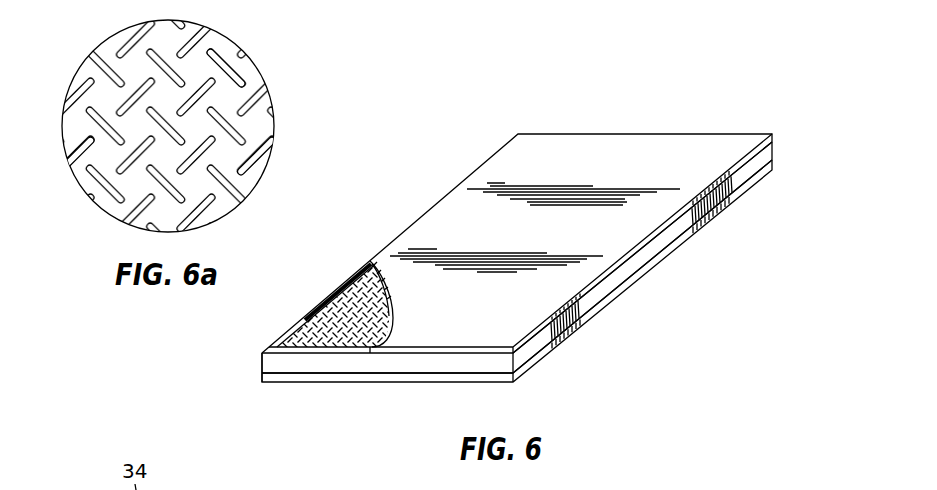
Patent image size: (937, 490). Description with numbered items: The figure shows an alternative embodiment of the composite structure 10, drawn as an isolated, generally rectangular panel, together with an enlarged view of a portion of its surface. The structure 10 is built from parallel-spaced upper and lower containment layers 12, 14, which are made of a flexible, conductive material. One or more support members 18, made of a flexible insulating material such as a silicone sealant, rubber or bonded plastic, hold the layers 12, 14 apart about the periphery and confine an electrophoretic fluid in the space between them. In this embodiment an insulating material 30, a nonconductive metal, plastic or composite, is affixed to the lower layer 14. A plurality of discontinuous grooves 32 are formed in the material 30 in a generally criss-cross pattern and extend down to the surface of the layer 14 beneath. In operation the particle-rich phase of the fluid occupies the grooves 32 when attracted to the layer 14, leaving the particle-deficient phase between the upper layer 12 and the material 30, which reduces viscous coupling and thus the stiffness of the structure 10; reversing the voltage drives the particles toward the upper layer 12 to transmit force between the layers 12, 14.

In FIG. 6, the composite structure 10 is at (410, 176).
In FIG. 6, the upper containment layer 12 is at (505, 162).
In FIG. 6, the lower containment layer 14 is at (285, 382).
In FIG. 6, the support member 18 is at (773, 151).
In FIG. 6a, the insulating material 30 is at (99, 92).
In FIG. 6, the insulating material 30 is at (323, 316).
In FIG. 6a, the discontinuous grooves 32 is at (247, 62).